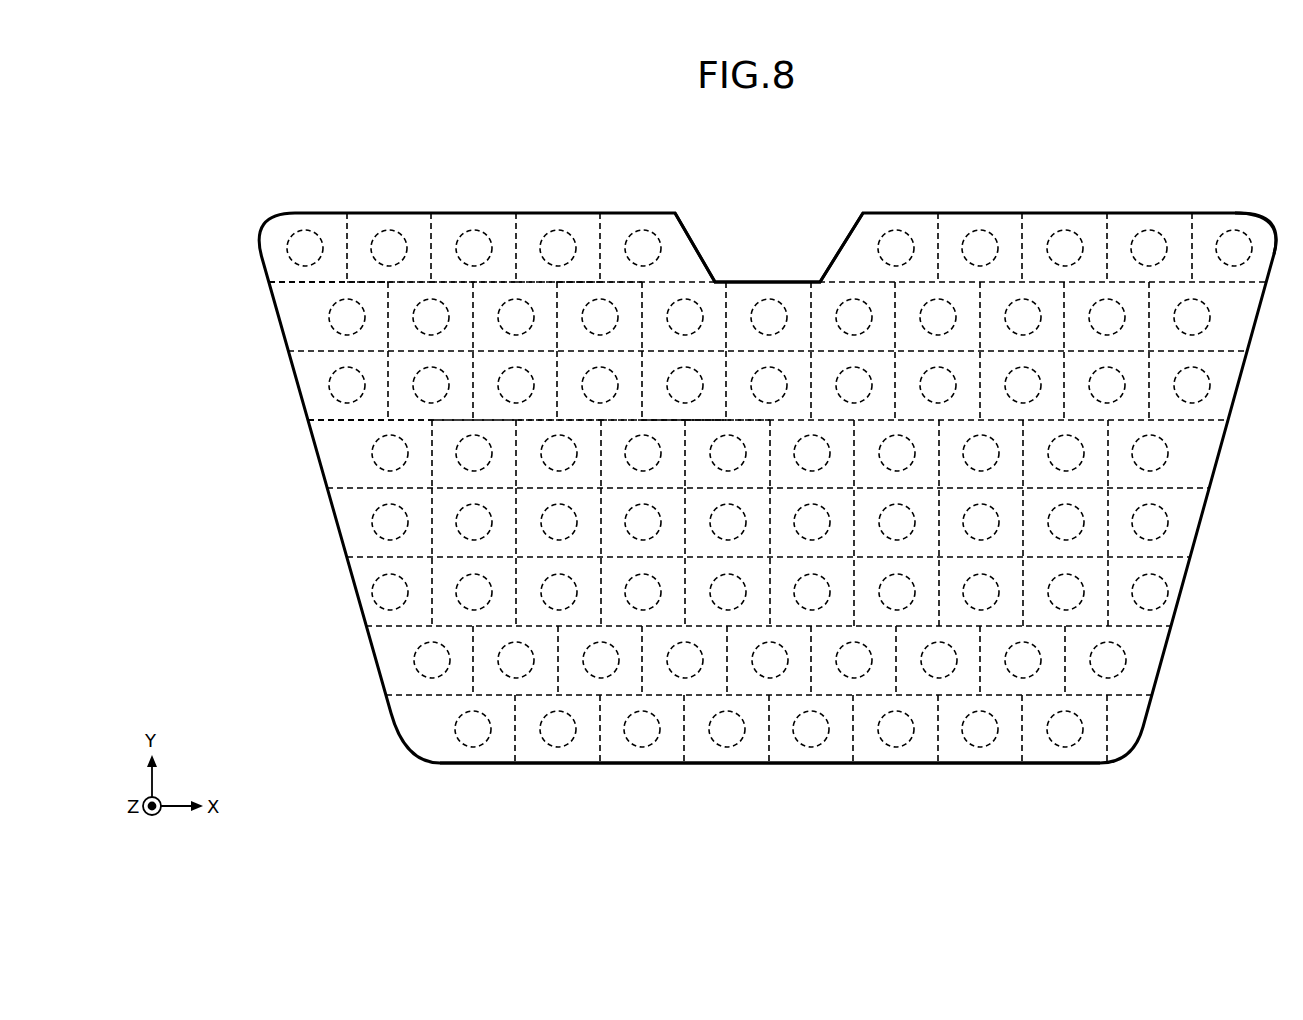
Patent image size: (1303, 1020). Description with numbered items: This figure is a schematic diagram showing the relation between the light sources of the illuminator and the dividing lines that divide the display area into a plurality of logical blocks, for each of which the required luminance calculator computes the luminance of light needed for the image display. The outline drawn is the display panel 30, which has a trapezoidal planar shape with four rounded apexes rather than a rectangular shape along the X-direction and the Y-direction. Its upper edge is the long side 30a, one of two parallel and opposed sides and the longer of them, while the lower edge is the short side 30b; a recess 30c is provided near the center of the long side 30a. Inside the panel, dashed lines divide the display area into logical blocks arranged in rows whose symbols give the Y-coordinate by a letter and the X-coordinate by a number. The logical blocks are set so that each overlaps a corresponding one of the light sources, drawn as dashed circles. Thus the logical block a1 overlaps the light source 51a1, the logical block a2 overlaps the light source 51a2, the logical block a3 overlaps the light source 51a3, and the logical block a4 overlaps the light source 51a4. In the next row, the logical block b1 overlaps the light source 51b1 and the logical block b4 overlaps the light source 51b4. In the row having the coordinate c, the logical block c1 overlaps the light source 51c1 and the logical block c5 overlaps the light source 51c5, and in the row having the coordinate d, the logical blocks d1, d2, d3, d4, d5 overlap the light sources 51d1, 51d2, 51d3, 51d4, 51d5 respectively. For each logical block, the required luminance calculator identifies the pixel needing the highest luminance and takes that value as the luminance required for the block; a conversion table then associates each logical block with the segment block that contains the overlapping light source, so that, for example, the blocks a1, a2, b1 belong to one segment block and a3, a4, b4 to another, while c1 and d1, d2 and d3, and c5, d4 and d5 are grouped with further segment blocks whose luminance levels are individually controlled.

The display panel 30 is at (258, 117).
The long side 30a is at (1216, 207).
The short side 30b is at (1053, 774).
The recess 30c is at (800, 272).
The logical block a1 is at (334, 223).
The logical block a2 is at (412, 223).
The logical block a3 is at (500, 223).
The logical block a4 is at (575, 223).
The logical block b1 is at (283, 292).
The logical block b4 is at (617, 298).
The logical block c1 is at (303, 362).
The logical block c5 is at (654, 378).
The logical block d1 is at (320, 432).
The logical block d2 is at (445, 477).
The logical block d3 is at (525, 472).
The logical block d4 is at (609, 472).
The logical block d5 is at (694, 472).
The light source 51a1 is at (306, 223).
The light source 51a2 is at (390, 223).
The light source 51a3 is at (474, 223).
The light source 51a4 is at (558, 223).
The light source 51b1 is at (329, 318).
The light source 51b4 is at (603, 298).
The light source 51c1 is at (329, 386).
The light source 51c5 is at (700, 370).
The light source 51d1 is at (330, 459).
The light source 51d2 is at (473, 472).
The light source 51d3 is at (572, 465).
The light source 51d4 is at (656, 465).
The light source 51d5 is at (741, 465).